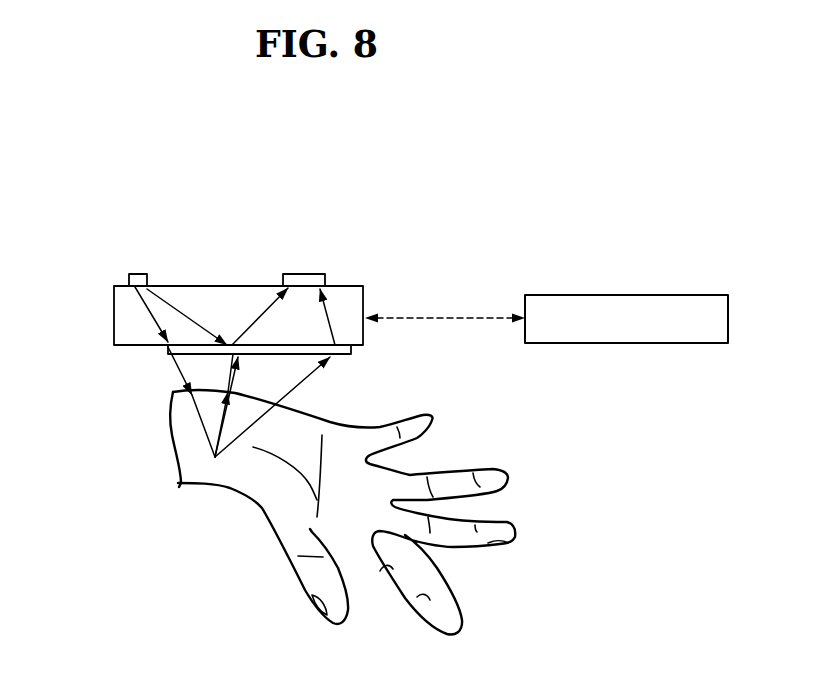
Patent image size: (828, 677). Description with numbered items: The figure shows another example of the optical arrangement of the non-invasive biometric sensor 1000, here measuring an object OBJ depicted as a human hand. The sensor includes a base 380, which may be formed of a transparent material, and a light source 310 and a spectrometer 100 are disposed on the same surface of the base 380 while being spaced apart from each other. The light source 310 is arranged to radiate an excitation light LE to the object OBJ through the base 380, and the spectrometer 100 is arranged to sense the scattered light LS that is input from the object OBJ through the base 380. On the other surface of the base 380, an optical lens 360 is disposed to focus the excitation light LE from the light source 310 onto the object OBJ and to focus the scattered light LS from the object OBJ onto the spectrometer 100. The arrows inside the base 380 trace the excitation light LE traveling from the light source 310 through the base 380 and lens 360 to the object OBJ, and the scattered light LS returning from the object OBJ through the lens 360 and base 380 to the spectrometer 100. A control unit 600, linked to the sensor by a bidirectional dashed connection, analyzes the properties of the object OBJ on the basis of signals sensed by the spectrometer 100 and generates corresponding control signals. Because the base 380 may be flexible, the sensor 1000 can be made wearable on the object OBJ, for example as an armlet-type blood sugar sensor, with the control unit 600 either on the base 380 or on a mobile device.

The non-invasive biometric sensor 1000 is at (581, 182).
The spectrometer 100 is at (302, 274).
The light source 310 is at (138, 274).
The optical lens 360 is at (168, 353).
The base 380 is at (120, 342).
The control unit 600 is at (627, 295).
The excitation light LE is at (190, 318).
The scattered light LS is at (307, 385).
The object OBJ is at (260, 497).